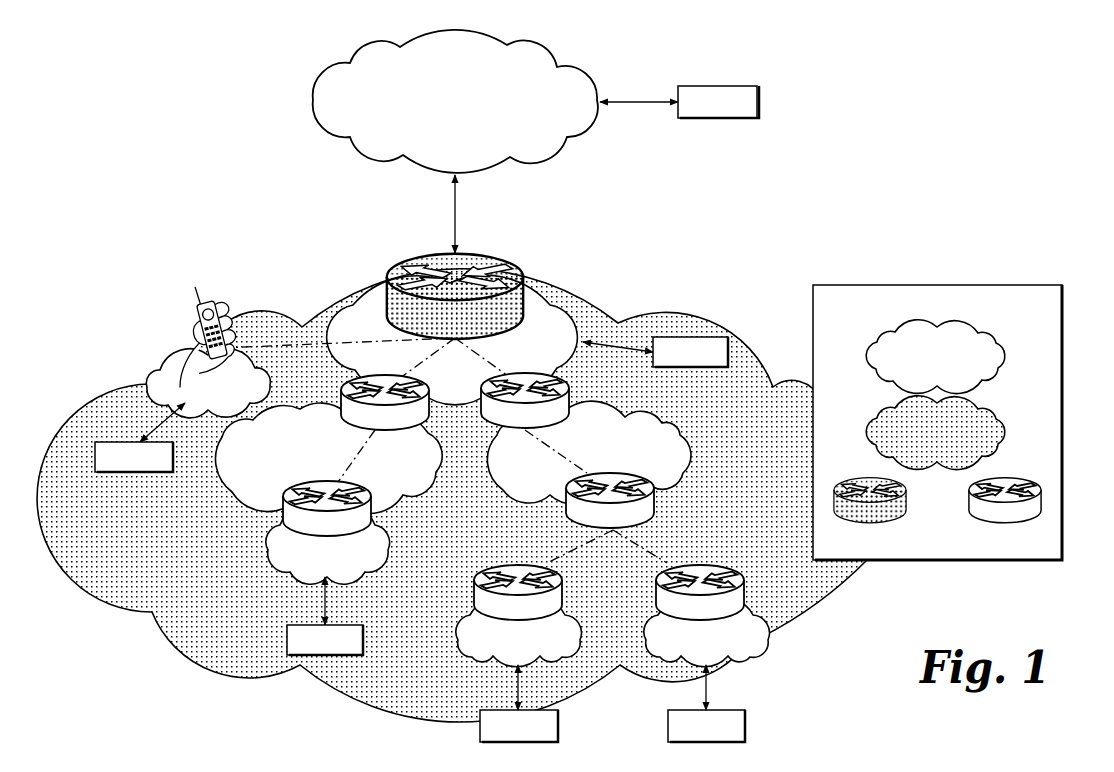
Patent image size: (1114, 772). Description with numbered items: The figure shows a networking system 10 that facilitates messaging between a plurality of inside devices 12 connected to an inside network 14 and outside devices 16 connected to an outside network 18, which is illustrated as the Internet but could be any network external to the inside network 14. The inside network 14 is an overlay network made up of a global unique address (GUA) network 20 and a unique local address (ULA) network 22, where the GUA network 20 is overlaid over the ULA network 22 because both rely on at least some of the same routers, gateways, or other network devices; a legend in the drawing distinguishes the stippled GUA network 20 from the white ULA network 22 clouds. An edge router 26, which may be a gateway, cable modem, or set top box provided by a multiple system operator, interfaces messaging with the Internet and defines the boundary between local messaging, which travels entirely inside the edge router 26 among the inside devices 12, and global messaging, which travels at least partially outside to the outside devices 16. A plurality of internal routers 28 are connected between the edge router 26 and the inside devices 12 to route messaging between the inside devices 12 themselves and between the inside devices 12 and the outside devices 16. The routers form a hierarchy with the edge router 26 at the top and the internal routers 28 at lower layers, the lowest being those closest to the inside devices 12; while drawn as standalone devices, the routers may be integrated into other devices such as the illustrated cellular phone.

The networking system 10 is at (718, 35).
The inside devices 12 is at (438, 526).
The inside network 14 is at (590, 285).
The outside devices 16 is at (717, 82).
The outside network 18 is at (562, 48).
The global unique address (GUA) network 20 is at (897, 413).
The unique local address (ULA) network 22 is at (670, 423).
The edge router (CER) 26 is at (480, 255).
The internal routers (IR) 28 is at (635, 493).